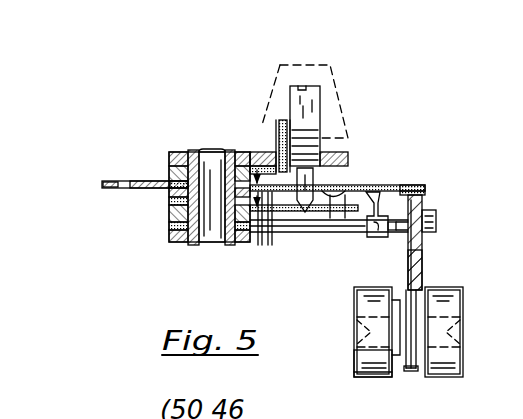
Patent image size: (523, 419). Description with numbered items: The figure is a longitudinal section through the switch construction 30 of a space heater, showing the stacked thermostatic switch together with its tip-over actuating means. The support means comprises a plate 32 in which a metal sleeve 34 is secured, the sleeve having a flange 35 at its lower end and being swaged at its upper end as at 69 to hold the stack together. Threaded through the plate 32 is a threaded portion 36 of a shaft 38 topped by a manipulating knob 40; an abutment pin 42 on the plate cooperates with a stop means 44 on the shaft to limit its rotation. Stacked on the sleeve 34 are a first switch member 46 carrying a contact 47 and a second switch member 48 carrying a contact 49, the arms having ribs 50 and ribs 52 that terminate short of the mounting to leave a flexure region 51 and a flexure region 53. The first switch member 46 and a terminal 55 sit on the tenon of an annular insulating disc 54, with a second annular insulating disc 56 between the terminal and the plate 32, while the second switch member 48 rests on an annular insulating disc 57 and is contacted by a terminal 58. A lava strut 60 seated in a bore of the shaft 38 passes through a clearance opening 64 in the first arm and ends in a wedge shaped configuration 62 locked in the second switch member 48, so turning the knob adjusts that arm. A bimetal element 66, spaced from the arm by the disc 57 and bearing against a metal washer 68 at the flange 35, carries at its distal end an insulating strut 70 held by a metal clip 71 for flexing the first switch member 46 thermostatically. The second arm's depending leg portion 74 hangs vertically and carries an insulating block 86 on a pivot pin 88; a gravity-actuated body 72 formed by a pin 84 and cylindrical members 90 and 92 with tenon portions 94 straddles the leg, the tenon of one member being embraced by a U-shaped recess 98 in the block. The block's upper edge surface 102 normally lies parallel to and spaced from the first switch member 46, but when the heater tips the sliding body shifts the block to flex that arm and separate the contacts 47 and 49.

The switch construction 30 is at (163, 146).
The plate 32 is at (178, 152).
The sleeve 34 is at (212, 240).
The flange 35 is at (190, 246).
The threaded portion 36 is at (312, 125).
The shaft 38 is at (295, 86).
The manipulating knob 40 is at (277, 62).
The abutment pin 42 is at (286, 120).
The stop means 44 is at (276, 120).
The first switch member 46 is at (270, 246).
The contact 47 is at (360, 185).
The second switch member 48 is at (260, 246).
The contact 49 is at (346, 234).
The ribs 50 is at (410, 190).
The flexure region 51 is at (257, 168).
The ribs 52 is at (348, 236).
The flexure region 53 is at (262, 166).
The annular insulating disc 54 is at (169, 200).
The terminal 55 is at (106, 181).
The annular insulating disc 56 is at (170, 183).
The annular insulating disc 57 is at (169, 222).
The terminal 58 is at (169, 205).
The strut 60 is at (318, 212).
The wedge shaped configuration 62 is at (300, 214).
The clearance opening 64 is at (262, 152).
The bimetal element 66 is at (245, 246).
The metal washer 68 is at (169, 232).
The swaged end 69 is at (192, 150).
The insulating strut 70 is at (378, 188).
The metal clip 71 is at (384, 238).
The gravity-actuated body 72 is at (352, 368).
The depending leg portion 74 is at (404, 290).
The pin 84 is at (354, 352).
The insulating block 86 is at (424, 255).
The pivot pin 88 is at (432, 222).
The cylindrical member 90 is at (360, 300).
The cylindrical member 92 is at (460, 376).
The tenon portion 94 is at (396, 372).
The U-shaped recess 98 is at (424, 272).
The upper edge surface 102 is at (426, 190).